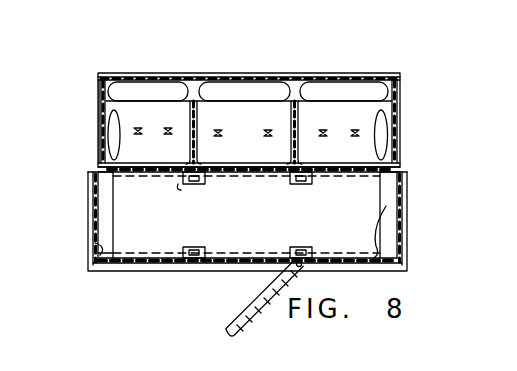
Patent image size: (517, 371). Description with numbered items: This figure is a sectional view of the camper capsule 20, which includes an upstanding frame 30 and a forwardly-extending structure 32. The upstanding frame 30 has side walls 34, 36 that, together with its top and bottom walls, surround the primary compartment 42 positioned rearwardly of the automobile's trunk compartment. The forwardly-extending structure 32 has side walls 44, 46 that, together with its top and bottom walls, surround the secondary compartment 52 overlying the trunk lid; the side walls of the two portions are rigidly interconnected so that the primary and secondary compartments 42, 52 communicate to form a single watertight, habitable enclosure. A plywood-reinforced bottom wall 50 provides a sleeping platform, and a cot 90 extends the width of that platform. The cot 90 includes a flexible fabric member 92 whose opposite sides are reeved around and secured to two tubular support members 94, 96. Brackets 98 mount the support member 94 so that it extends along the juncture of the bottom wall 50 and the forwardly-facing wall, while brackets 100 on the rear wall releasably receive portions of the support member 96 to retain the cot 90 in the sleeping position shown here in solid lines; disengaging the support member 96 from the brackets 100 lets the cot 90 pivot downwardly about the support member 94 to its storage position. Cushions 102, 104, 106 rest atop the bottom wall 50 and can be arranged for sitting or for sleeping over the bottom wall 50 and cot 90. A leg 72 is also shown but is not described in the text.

The camper capsule 20 is at (398, 61).
The upstanding frame 30 is at (409, 195).
The forwardly-extending structure 32 is at (405, 119).
The side wall 34 is at (93, 220).
The side wall 36 is at (403, 218).
The primary compartment 42 is at (148, 240).
The side wall 44 is at (100, 124).
The side wall 46 is at (397, 138).
The bottom wall 50 is at (181, 189).
The secondary compartment 52 is at (141, 146).
The support leg 72 is at (255, 297).
The cot 90 is at (382, 272).
The flexible fabric member 92 is at (330, 221).
The tubular support member 94 is at (93, 175).
The tubular support member 96 is at (105, 257).
The brackets 98 is at (107, 176).
The brackets 100 is at (302, 250).
The cushion 102 is at (178, 92).
The cushion 104 is at (268, 92).
The cushion 106 is at (378, 90).